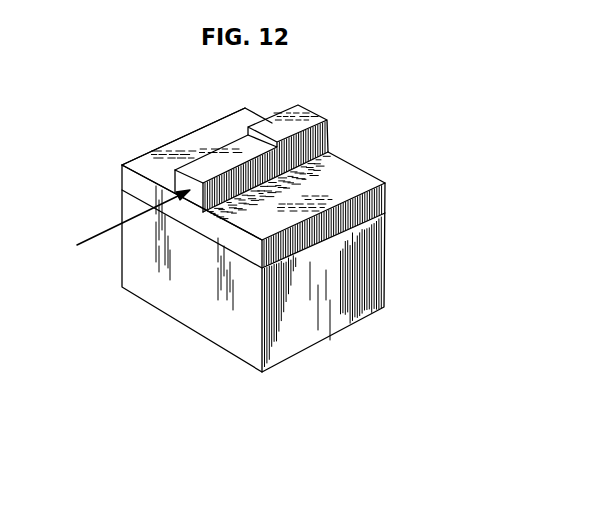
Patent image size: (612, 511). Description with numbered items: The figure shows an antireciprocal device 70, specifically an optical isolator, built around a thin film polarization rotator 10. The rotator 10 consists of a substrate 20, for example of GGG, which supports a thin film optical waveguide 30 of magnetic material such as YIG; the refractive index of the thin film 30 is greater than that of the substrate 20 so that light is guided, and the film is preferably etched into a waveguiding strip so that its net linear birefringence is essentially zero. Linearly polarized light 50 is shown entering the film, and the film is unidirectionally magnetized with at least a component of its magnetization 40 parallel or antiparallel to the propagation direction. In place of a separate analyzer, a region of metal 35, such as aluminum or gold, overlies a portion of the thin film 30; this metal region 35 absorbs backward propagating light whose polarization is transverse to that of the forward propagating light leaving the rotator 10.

The polarization rotator 10 is at (399, 264).
The substrate 20 is at (318, 320).
The thin film optical waveguide 30 is at (322, 143).
The region of metal 35 is at (307, 106).
The magnetization 40 is at (262, 164).
The linearly polarized light 50 is at (97, 234).
The antireciprocal device 70 is at (167, 101).